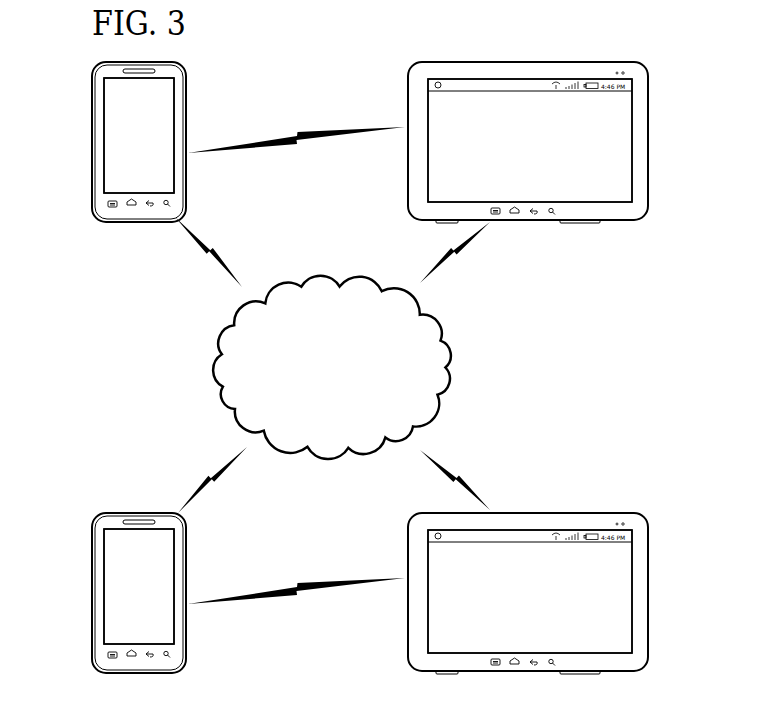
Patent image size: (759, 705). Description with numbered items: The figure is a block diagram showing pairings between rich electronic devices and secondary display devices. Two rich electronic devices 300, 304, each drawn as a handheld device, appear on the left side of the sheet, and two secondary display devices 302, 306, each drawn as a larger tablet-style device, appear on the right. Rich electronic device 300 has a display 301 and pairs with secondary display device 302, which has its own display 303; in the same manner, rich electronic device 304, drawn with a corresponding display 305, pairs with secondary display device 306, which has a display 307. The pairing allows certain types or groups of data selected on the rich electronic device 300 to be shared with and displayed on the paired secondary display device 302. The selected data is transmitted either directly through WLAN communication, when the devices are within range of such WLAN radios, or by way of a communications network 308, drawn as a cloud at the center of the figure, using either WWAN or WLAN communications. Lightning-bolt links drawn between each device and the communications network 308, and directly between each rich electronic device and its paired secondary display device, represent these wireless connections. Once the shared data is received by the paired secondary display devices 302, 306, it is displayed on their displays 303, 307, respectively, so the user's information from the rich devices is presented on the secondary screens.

The rich electronic device 300 is at (92, 108).
The display 301 is at (112, 160).
The secondary display device 302 is at (648, 107).
The display 303 is at (613, 152).
The rich electronic device 304 is at (92, 560).
The display of mobile terminal 305 is at (112, 612).
The secondary display device 306 is at (648, 558).
The display 307 is at (613, 603).
The communications network 308 is at (207, 368).